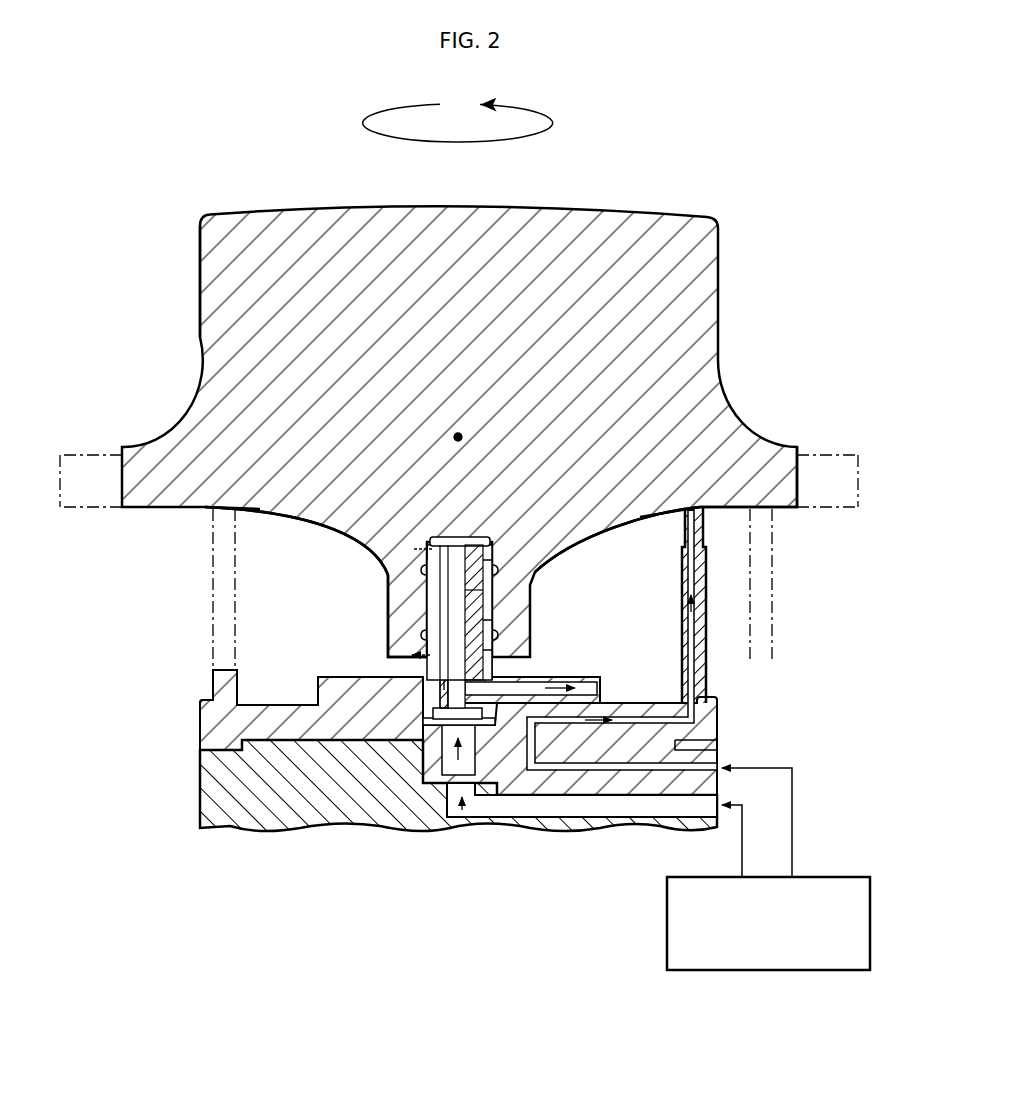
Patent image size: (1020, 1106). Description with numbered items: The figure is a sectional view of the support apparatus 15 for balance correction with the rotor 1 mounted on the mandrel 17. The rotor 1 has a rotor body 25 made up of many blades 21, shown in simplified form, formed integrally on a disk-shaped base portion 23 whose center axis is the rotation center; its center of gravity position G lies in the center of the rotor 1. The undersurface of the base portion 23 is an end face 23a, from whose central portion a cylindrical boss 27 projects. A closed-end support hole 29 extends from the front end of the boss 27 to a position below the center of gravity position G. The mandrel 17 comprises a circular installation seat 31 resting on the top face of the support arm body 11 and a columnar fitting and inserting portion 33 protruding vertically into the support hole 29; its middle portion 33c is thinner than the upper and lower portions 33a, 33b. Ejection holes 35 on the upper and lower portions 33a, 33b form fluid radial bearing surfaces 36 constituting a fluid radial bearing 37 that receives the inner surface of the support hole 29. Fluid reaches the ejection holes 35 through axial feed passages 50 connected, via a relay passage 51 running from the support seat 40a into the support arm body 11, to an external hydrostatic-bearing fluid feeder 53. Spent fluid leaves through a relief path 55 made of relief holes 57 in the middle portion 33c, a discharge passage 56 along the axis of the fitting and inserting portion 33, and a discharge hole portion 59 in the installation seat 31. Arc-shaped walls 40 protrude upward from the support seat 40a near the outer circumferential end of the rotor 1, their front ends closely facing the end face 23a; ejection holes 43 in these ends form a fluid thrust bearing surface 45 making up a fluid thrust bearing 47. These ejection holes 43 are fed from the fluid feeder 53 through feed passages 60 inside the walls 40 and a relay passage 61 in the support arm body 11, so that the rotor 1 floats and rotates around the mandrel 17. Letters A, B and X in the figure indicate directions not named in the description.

The rotor 1 is at (681, 170).
The support arm body 11 is at (318, 822).
The support apparatus 15 is at (768, 697).
The mandrel 17 is at (460, 538).
The blades 21 is at (720, 292).
The base portion 23 is at (792, 470).
The end face 23a is at (300, 516).
The rotor body 25 is at (196, 334).
The boss 27 is at (387, 600).
The support hole 29 is at (478, 590).
The installation seat 31 is at (318, 690).
The fitting and inserting portion 33 is at (480, 540).
The upper portion 33a is at (489, 558).
The lower portion 33b is at (484, 652).
The middle portion 33c is at (476, 620).
The ejection holes 35 is at (424, 551).
The fluid radial bearing surfaces 36 is at (430, 543).
The fluid radial bearing 37 is at (428, 648).
The walls 40 is at (212, 600).
The support seat 40a is at (236, 722).
The ejection holes 43 is at (691, 506).
The fluid thrust bearing surface 45 is at (203, 511).
The fluid thrust bearing 47 is at (686, 505).
The feed passages 50 is at (438, 695).
The relay passage 51 is at (526, 812).
The hydrostatic-bearing fluid feeder 53 is at (826, 876).
The relief path 55 is at (630, 608).
The discharge passage 56 is at (560, 680).
The relief holes 57 is at (505, 657).
The discharge hole portion 59 is at (565, 692).
The feed passages 60 is at (700, 660).
The relay passage 61 is at (706, 748).
The center of gravity position G is at (458, 432).
The direction A is at (391, 546).
The direction B is at (513, 580).
The direction X is at (790, 612).